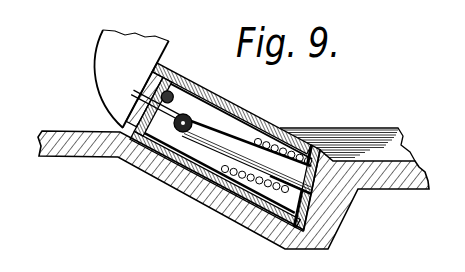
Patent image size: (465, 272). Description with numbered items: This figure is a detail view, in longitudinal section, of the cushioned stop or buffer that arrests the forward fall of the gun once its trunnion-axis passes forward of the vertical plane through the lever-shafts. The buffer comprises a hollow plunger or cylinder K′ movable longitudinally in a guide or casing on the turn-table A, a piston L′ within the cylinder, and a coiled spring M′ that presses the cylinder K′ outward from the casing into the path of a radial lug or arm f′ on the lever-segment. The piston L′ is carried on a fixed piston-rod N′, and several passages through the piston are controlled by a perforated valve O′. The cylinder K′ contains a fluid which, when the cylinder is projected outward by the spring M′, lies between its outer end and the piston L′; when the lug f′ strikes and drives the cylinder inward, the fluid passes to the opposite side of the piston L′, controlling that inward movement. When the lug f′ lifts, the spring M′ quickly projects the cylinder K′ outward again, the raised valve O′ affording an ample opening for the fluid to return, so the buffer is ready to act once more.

The radial lug f′ is at (132, 79).
The piston L′ is at (186, 88).
The hollow plunger or cylinder K′ is at (275, 130).
The coiled spring M′ is at (320, 166).
The perforated valve O′ is at (137, 165).
The fixed piston-rod N′ is at (178, 188).
The turn-table A is at (228, 218).